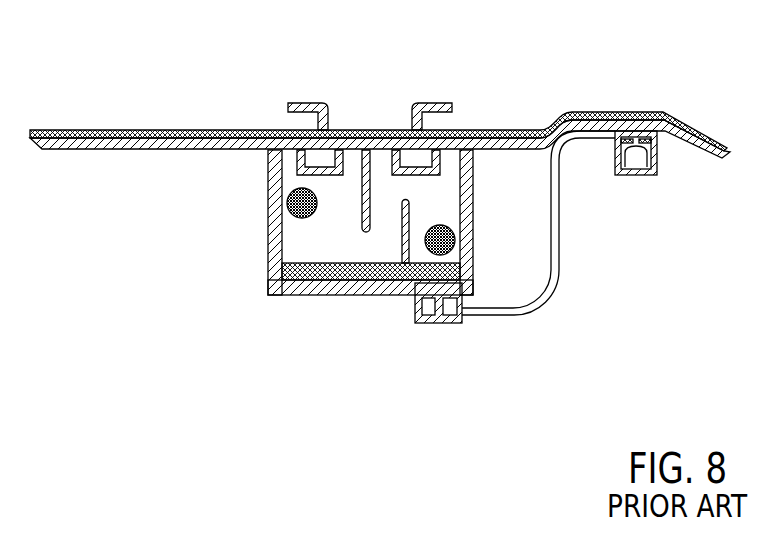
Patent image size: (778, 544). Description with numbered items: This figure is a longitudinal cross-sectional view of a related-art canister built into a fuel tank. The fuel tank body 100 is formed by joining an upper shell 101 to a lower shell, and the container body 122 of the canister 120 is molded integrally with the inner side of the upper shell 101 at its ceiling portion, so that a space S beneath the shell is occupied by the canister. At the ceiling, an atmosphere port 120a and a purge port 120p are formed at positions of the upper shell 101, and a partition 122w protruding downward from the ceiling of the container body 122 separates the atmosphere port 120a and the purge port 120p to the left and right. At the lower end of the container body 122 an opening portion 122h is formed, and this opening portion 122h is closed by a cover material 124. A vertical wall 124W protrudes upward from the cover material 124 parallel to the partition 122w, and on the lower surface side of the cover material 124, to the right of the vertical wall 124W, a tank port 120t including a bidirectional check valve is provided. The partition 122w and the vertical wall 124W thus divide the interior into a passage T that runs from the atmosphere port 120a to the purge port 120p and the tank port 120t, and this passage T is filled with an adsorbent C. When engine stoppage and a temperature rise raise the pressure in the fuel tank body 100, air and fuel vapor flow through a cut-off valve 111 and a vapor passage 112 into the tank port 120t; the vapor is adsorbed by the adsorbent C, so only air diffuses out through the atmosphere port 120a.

The fuel tank body 100 is at (380, 108).
The upper shell 101 is at (181, 133).
The canister 120 is at (326, 214).
The atmosphere port 120a is at (300, 103).
The purge port 120p is at (437, 103).
The tank port 120t is at (433, 326).
The container body 122 is at (265, 249).
The opening portion 122h is at (285, 296).
The partition 122w is at (372, 200).
The cover material 124 is at (347, 296).
The vertical wall 124W is at (393, 297).
The cut-off valve 111 is at (633, 177).
The vapor passage 112 is at (558, 218).
The space S is at (234, 188).
The adsorbent C is at (291, 213).
The passage T is at (430, 205).